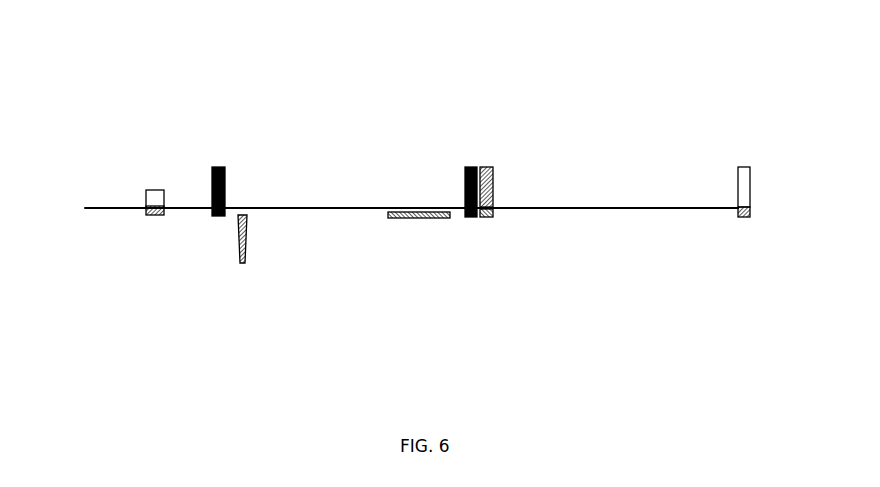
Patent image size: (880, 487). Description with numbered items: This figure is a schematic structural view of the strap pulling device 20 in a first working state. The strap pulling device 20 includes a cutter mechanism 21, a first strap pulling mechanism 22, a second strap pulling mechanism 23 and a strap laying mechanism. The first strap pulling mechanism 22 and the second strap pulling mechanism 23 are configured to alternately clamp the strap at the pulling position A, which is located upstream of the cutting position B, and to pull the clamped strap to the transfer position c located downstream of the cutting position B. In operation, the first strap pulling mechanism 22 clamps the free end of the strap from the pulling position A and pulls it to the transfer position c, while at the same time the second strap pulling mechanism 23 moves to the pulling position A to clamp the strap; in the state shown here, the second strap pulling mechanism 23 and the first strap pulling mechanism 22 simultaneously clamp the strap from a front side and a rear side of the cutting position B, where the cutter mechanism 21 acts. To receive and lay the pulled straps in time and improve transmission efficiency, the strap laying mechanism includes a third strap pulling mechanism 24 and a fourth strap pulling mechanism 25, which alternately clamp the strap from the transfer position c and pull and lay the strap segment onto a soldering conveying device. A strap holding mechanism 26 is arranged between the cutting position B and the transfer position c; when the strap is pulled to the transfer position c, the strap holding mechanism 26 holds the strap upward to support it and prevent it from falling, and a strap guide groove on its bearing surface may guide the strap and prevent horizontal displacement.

The strap pulling device 20 is at (125, 110).
The cutter mechanism 21 is at (243, 263).
The first strap pulling mechanism 22 is at (465, 169).
The second strap pulling mechanism 23 is at (228, 178).
The third strap pulling mechanism 24 is at (495, 172).
The fourth strap pulling mechanism 25 is at (748, 183).
The strap holding mechanism 26 is at (418, 228).
The pulling position A is at (215, 222).
The cutting position B is at (256, 222).
The transfer position c is at (470, 222).